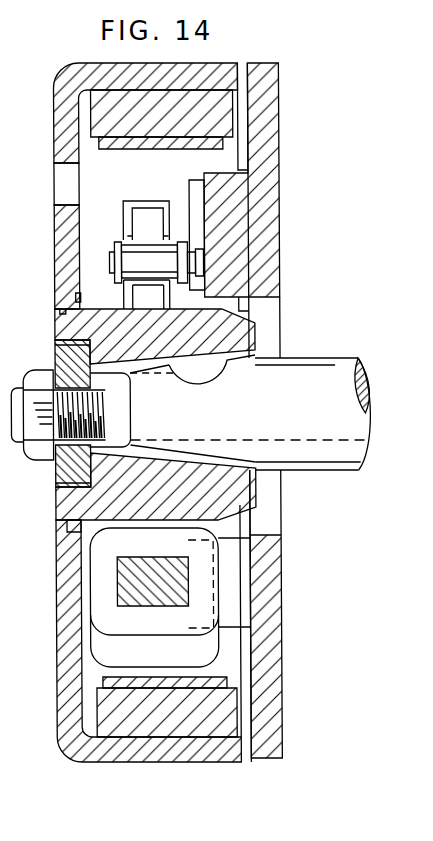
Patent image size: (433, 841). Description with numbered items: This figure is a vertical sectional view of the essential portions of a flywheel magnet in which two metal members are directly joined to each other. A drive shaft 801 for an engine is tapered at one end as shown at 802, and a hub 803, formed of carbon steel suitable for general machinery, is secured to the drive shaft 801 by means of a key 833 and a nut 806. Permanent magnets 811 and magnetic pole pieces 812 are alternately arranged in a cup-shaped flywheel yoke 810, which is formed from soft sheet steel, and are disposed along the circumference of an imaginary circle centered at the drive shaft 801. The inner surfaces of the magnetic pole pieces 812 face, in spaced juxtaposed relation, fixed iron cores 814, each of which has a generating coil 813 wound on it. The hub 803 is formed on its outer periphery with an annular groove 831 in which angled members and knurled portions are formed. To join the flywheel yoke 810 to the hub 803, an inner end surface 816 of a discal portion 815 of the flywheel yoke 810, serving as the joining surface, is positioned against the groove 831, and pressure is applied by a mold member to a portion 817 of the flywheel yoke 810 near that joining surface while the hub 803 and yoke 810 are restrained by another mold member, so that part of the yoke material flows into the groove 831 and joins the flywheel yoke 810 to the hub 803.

The drive shaft 801 is at (331, 371).
The tapered end 802 is at (176, 451).
The hub 803 is at (224, 320).
The nut 806 is at (23, 448).
The flywheel yoke 810 is at (64, 146).
The permanent magnets 811 is at (107, 105).
The magnetic pole pieces 812 is at (195, 138).
The generating coil 813 is at (177, 625).
The fixed iron cores 814 is at (177, 587).
The discal portion 815 is at (65, 228).
The inner end surface 816 is at (74, 305).
The portion near the joining surface 817 is at (75, 302).
The annular groove 831 is at (67, 312).
The key 833 is at (241, 357).